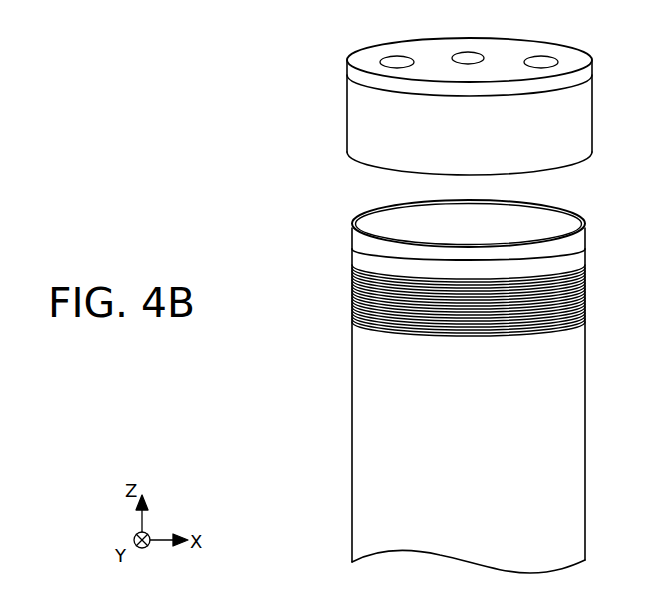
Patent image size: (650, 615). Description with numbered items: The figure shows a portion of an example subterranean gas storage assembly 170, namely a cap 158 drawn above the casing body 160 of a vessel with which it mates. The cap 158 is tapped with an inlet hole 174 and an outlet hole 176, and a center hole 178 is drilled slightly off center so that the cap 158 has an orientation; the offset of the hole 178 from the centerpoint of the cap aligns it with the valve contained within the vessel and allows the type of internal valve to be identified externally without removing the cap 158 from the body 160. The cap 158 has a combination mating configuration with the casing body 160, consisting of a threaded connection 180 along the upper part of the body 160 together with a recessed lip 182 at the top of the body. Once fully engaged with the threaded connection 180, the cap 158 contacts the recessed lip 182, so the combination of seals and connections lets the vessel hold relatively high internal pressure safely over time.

The vaporizer cartridge assembly 170 is at (196, 40).
The cap 158 is at (469, 106).
The outlet hole 176 is at (395, 64).
The center hole 178 is at (468, 61).
The inlet hole 174 is at (542, 63).
The casing body 160 is at (468, 400).
The recessed lip 182 is at (352, 228).
The threaded connection 180 is at (491, 338).